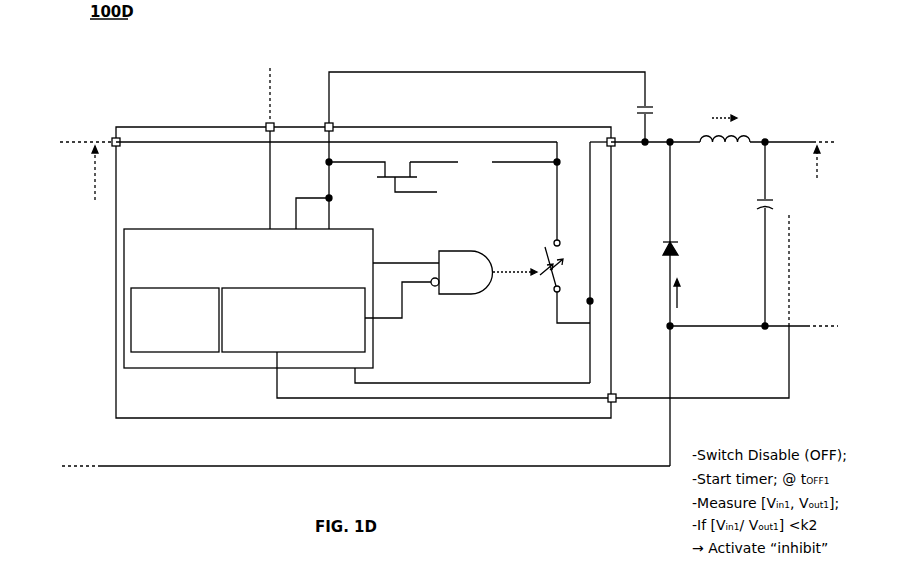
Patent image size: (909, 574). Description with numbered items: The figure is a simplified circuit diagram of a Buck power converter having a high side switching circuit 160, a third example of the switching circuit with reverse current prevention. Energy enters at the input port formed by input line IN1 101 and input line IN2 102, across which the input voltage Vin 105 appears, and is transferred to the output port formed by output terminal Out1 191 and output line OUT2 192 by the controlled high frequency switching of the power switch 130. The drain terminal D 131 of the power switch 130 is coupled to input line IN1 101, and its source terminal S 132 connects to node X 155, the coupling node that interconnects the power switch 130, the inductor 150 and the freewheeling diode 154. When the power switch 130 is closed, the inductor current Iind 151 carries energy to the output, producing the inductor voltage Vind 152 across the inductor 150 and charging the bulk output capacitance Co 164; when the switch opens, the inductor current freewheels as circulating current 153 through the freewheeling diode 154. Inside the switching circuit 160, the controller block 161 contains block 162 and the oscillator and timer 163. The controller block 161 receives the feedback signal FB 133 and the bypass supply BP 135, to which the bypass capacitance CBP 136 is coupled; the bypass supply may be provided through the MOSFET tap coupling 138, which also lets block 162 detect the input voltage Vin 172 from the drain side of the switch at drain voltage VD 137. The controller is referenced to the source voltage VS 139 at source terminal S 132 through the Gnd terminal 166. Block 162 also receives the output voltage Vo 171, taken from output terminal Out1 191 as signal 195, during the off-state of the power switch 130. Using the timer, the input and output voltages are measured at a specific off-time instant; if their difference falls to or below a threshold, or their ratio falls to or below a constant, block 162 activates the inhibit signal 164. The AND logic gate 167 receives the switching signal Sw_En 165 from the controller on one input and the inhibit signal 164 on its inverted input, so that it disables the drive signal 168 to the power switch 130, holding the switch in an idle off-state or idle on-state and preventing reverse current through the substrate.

The input line IN1 101 is at (65, 110).
The input line IN2 102 is at (75, 432).
The input voltage Vin 105 is at (82, 182).
The power switch 130 is at (545, 290).
The drain terminal D 131 is at (100, 118).
The source terminal S 132 is at (610, 120).
The feedback signal FB 133 is at (253, 100).
The bypass supply BP 135 is at (320, 100).
The bypass capacitance CBP 136 is at (667, 103).
The drain voltage VD 137 is at (530, 237).
The coupling 138 is at (443, 172).
The source voltage VS 139 is at (565, 332).
The inductor 150 is at (767, 103).
The inductor current Iind 151 is at (727, 90).
The inductor voltage Vind 152 is at (727, 172).
The circulating current 153 is at (702, 287).
The freewheeling diode 154 is at (683, 253).
The node X 155 is at (670, 117).
The switching circuit 160 is at (200, 122).
The controller block 161 is at (248, 298).
The block 162 is at (293, 320).
The oscillator & timer 163 is at (175, 320).
The inhibit signal 164 is at (415, 287).
The switching signal Sw_En 165 is at (422, 233).
The Gnd terminal 166 is at (438, 192).
The AND logic gate 167 is at (466, 272).
The drive signal 168 is at (520, 280).
The output voltage Vo 171 is at (250, 386).
The input voltage Vin 172 is at (303, 188).
The output terminal Out1 191 is at (822, 115).
The output line OUT2 192 is at (820, 357).
The signal 195 is at (792, 172).